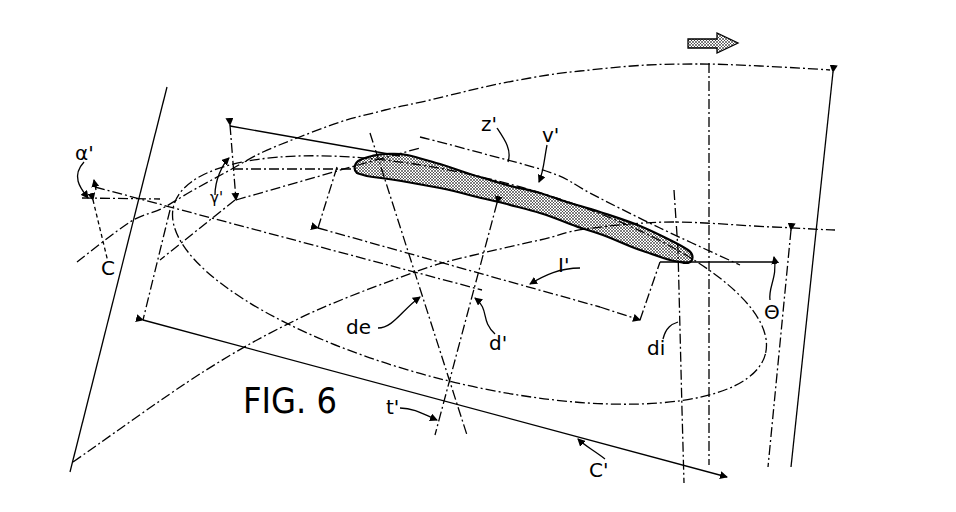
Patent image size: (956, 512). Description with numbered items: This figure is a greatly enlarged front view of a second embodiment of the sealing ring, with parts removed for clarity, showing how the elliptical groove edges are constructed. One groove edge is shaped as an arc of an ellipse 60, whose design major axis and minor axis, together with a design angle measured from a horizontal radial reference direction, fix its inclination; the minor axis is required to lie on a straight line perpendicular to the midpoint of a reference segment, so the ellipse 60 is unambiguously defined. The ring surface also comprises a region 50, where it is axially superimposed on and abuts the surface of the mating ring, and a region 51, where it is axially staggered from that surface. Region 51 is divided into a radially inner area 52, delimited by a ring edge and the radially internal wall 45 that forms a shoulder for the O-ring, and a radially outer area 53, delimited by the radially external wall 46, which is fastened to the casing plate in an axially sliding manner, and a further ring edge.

The radially internal wall 45 is at (774, 222).
The radially external wall 46 is at (768, 62).
The region 50 is at (815, 257).
The region 51 is at (122, 182).
The radially inner area 52 is at (198, 174).
The radially outer area 53 is at (143, 135).
The ellipse 60 is at (738, 398).